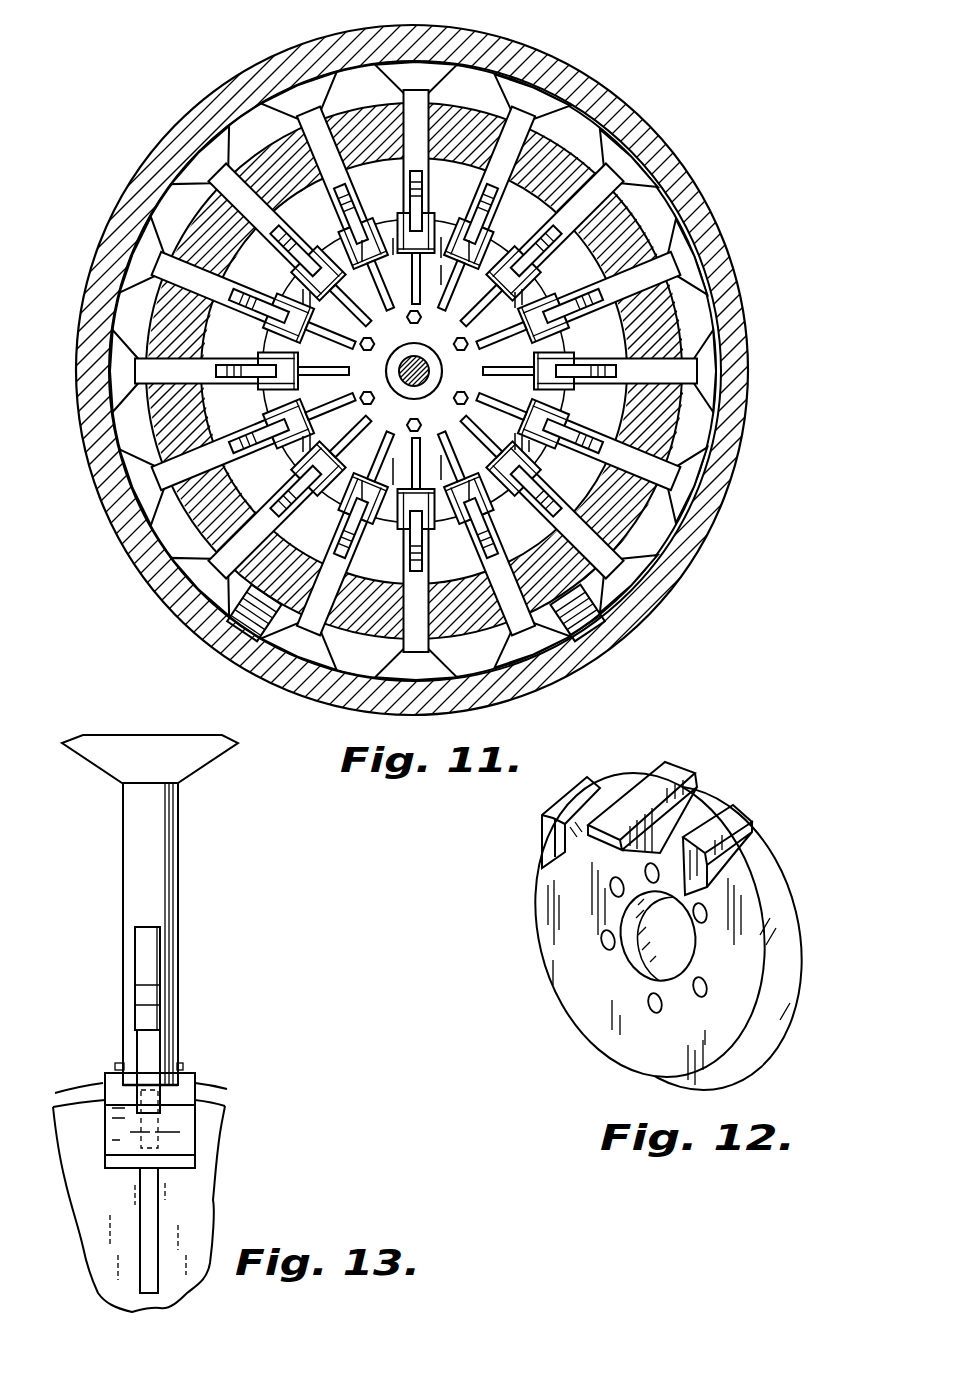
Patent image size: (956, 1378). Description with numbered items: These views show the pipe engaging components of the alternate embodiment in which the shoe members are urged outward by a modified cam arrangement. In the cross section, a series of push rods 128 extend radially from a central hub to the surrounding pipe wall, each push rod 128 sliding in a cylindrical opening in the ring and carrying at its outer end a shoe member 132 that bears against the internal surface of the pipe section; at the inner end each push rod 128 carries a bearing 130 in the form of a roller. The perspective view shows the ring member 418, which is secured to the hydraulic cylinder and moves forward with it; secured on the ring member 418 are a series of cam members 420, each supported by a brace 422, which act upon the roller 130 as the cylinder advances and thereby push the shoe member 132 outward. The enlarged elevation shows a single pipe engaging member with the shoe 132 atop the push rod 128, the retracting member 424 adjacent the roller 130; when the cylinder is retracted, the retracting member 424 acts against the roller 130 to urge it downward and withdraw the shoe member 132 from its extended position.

In FIG. 13, the push rod 128 is at (170, 870).
In FIG. 13, the bearing 130 is at (150, 1052).
In FIG. 13, the shoe member 132 is at (120, 742).
In FIG. 13, the ring member 418 is at (105, 1263).
In FIG. 12, the ring member 418 is at (800, 942).
In FIG. 13, the cam member 420 is at (117, 1090).
In FIG. 12, the cam member 420 is at (668, 777).
In FIG. 13, the brace 422 is at (137, 1220).
In FIG. 12, the brace 422 is at (652, 830).
In FIG. 13, the retracting member 424 is at (150, 995).